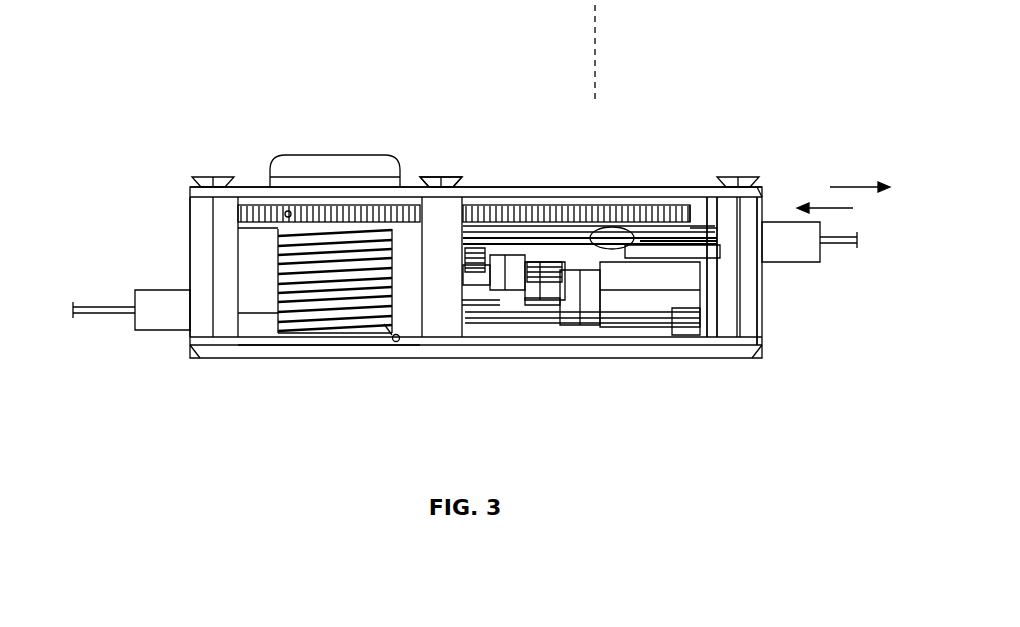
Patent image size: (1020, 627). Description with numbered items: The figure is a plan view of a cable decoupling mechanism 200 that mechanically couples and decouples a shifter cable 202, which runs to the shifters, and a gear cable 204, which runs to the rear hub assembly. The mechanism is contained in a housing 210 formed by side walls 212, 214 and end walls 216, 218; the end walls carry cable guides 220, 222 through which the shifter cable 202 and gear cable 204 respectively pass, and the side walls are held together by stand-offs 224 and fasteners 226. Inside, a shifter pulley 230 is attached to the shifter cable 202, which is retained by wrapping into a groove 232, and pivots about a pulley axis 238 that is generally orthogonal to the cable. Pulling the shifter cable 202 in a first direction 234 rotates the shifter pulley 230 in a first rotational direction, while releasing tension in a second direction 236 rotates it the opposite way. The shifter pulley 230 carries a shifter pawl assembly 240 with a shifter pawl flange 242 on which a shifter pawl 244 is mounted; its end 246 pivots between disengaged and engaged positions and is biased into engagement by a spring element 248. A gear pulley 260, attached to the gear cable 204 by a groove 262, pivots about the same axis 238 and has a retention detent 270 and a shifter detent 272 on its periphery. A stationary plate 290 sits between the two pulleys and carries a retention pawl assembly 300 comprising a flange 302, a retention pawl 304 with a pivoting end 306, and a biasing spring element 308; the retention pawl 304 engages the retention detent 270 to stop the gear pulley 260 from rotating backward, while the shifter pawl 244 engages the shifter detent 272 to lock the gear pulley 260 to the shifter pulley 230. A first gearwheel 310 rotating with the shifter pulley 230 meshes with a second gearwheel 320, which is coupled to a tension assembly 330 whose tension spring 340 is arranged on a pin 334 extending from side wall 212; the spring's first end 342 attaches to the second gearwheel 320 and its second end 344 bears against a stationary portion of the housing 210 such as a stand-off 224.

The cable decoupling mechanism 200 is at (287, 64).
The shifter cable 202 is at (838, 245).
The gear cable 204 is at (110, 307).
The housing 210 is at (198, 363).
The side wall 212 is at (268, 345).
The side wall 214 is at (473, 187).
The end wall 216 is at (758, 298).
The end wall 218 is at (190, 245).
The cable guide 220 is at (790, 222).
The cable guide 222 is at (160, 313).
The stand-off 224 is at (718, 320).
The fastener 226 is at (437, 187).
The shifter pulley 230 is at (679, 205).
The groove 232 is at (590, 227).
The first direction 234 is at (862, 185).
The second direction 236 is at (815, 206).
The pulley axis 238 is at (595, 50).
The shifter pawl assembly 240 is at (544, 320).
The shifter pawl flange 242 is at (540, 235).
The shifter pawl 244 is at (510, 303).
The end 246 is at (570, 323).
The spring element 248 is at (560, 270).
The gear pulley 260 is at (672, 325).
The groove 262 is at (640, 325).
The retention detent 270 is at (465, 264).
The shifter detent 272 is at (595, 305).
The stationary plate 290 is at (695, 258).
The retention pawl assembly 300 is at (466, 328).
The flange 302 is at (488, 226).
The retention pawl 304 is at (482, 315).
The end 306 is at (530, 260).
The spring element 308 is at (480, 253).
The first gearwheel 310 is at (625, 207).
The second gearwheel 320 is at (262, 205).
The tension assembly 330 is at (382, 322).
The pin 334 is at (345, 336).
The tension spring 340 is at (340, 250).
The first end 342 is at (280, 224).
The second end 344 is at (399, 341).